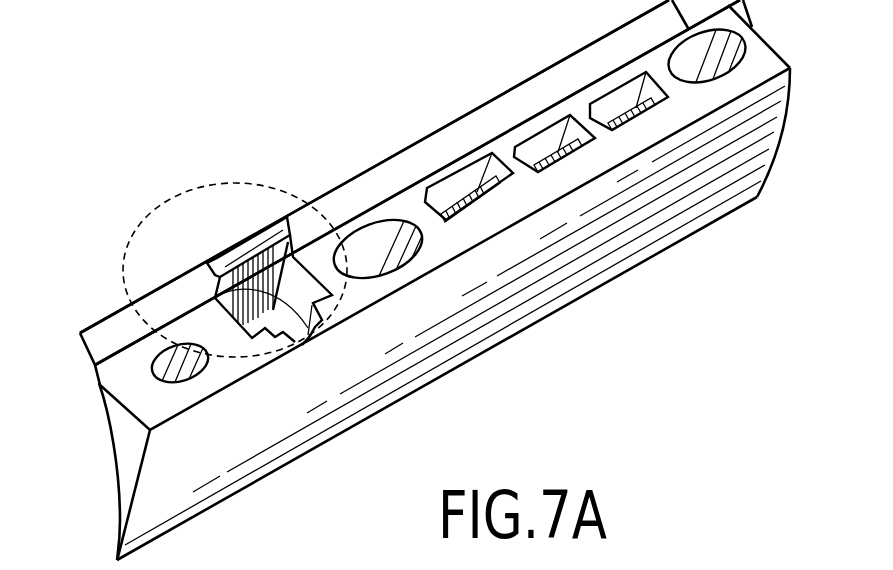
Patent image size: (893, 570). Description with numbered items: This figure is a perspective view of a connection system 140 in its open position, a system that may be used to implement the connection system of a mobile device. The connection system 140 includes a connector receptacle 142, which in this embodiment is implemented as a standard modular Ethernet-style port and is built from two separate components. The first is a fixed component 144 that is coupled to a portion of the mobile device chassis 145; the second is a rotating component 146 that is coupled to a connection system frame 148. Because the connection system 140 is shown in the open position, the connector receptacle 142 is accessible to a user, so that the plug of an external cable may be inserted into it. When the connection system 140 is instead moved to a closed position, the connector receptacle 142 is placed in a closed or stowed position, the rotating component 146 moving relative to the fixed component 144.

The connection system 140 is at (658, 410).
The connector receptacle 142 is at (123, 258).
The fixed component 144 is at (251, 257).
The mobile device chassis 145 is at (422, 140).
The rotating component 146 is at (215, 296).
The connection system frame 148 is at (632, 249).